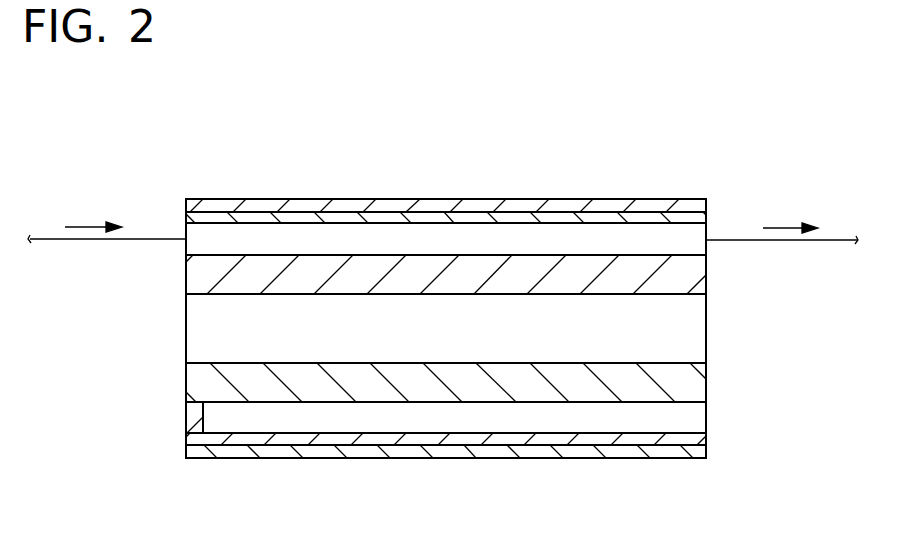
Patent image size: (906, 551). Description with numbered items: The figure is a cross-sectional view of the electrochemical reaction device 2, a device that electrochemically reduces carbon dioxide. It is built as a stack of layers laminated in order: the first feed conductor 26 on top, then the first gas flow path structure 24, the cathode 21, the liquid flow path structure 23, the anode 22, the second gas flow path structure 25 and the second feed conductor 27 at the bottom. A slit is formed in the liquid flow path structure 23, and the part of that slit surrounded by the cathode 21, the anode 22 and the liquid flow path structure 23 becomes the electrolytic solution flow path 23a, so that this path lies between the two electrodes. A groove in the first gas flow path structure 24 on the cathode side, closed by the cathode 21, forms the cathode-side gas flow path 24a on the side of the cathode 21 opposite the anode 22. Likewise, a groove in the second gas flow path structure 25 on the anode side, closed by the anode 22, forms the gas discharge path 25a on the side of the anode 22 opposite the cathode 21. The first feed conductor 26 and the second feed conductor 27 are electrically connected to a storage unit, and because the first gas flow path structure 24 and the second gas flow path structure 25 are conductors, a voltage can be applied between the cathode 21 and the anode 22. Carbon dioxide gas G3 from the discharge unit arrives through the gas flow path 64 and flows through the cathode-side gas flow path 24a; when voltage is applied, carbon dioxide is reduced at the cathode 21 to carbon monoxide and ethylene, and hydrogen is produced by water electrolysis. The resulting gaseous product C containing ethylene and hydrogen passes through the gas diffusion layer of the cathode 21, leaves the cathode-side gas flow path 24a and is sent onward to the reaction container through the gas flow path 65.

The electrochemical reaction device 2 is at (446, 140).
The cathode 21 is at (706, 277).
The anode 22 is at (706, 385).
The liquid flow path structure 23 is at (186, 312).
The electrolytic solution flow path 23a is at (232, 360).
The first gas flow path structure 24 is at (706, 220).
The cathode-side gas flow path 24a is at (387, 228).
The second gas flow path structure 25 is at (706, 440).
The gas discharge path 25a is at (276, 438).
The first feed conductor 26 is at (535, 200).
The second feed conductor 27 is at (453, 459).
The gas flow path 64 is at (92, 242).
The gas flow path 65 is at (833, 238).
The carbon dioxide gas G3 is at (93, 212).
The gaseous product C is at (790, 214).